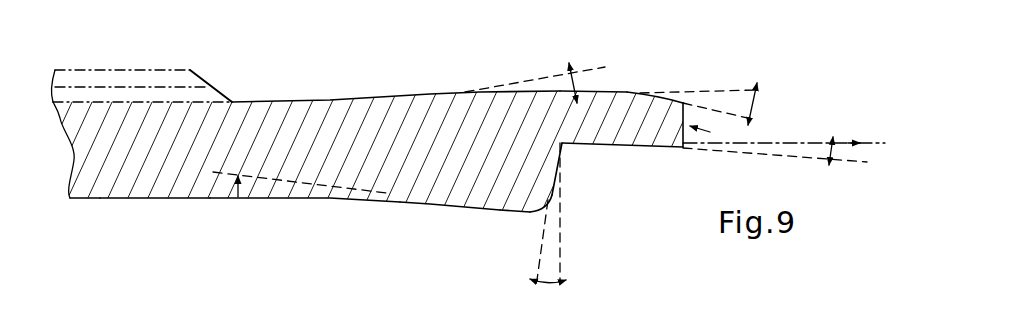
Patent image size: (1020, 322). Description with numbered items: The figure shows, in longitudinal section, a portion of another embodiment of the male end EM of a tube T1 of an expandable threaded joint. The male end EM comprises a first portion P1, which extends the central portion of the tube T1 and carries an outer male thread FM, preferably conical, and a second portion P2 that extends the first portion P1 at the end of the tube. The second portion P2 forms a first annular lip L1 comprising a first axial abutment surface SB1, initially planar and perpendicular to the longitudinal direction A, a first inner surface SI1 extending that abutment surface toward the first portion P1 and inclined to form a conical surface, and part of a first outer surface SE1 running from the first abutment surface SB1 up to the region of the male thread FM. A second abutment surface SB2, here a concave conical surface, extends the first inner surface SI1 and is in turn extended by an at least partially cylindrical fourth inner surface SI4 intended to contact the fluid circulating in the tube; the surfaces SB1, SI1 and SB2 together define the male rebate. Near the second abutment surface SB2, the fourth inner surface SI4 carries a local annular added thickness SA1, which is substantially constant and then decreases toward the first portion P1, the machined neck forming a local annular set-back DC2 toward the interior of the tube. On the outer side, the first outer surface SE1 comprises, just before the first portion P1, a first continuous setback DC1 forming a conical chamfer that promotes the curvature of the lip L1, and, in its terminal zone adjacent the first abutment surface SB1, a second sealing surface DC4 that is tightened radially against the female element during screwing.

The male end EM is at (330, 72).
The outer male thread FM is at (150, 71).
The first setback DC1 is at (428, 91).
The local annular set-back DC2 is at (440, 205).
The second sealing surface DC4 is at (652, 106).
The first outer surface SE1 is at (628, 86).
The first inner surface SI1 is at (650, 147).
The fourth inner surface SI4 is at (525, 208).
The added thickness SA1 is at (513, 217).
The first axial abutment surface SB1 is at (720, 164).
The second abutment surface SB2 is at (631, 162).
The first annular lip L1 is at (698, 91).
The longitudinal direction A is at (799, 142).
The first portion P1 is at (82, 207).
The second portion P2 is at (373, 201).
The tube T1 is at (107, 201).